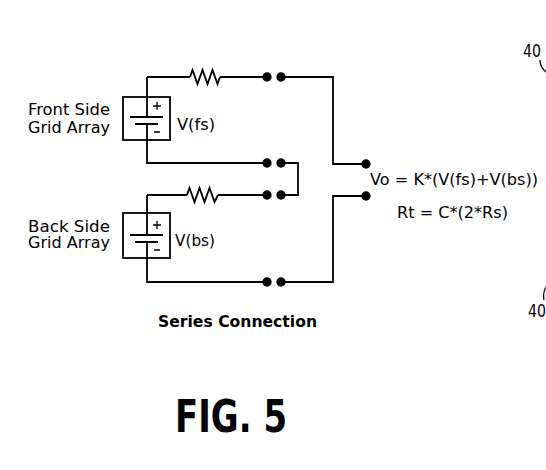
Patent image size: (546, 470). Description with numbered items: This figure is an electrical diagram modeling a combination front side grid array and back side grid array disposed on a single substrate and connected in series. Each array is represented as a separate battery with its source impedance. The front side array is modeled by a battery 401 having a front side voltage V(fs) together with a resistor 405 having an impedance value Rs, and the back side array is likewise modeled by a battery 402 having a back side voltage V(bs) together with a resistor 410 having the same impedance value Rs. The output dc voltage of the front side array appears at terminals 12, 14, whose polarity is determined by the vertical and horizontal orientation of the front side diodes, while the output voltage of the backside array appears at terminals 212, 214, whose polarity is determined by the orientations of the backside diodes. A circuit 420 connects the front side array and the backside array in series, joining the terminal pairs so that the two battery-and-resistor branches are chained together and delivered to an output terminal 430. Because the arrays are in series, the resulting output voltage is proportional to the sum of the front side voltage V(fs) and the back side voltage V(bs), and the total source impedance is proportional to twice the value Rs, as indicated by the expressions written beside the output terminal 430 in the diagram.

The battery 401 is at (132, 97).
The battery 402 is at (133, 258).
The resistor 405 is at (190, 75).
The resistor 410 is at (188, 192).
The terminal 12 is at (267, 77).
The terminal 14 is at (267, 163).
The terminal 212 is at (267, 196).
The terminal 214 is at (267, 282).
The circuit 420 is at (333, 117).
The output terminal 430 is at (366, 196).